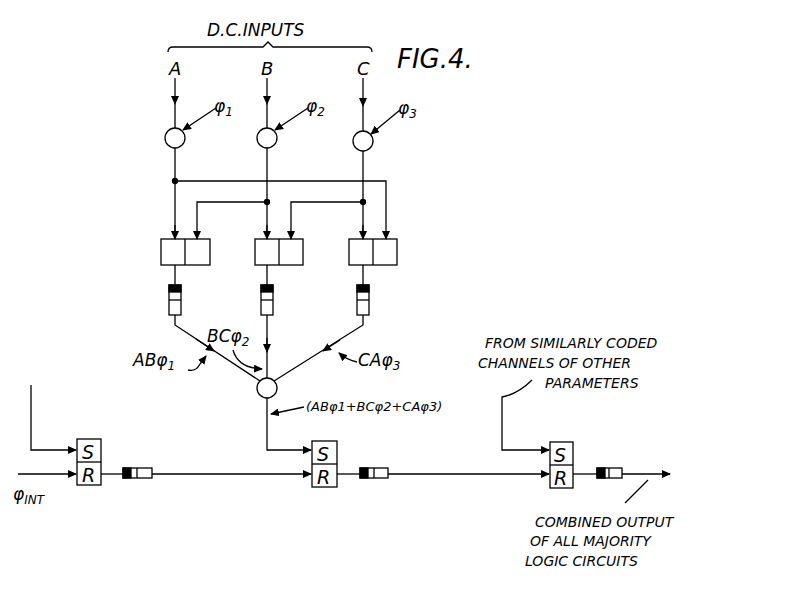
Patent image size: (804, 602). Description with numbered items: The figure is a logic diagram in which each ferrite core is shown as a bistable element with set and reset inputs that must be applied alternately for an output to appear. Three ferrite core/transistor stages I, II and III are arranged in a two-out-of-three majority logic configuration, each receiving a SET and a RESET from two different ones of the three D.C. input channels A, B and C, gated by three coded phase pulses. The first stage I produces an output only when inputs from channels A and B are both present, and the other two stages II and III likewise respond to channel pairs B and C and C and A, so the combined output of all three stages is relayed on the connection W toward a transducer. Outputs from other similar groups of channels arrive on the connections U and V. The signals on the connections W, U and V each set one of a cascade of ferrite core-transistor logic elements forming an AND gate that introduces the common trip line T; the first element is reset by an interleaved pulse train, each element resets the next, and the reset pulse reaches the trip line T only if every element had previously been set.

The first ferrite core/transistor stage I is at (174, 272).
The second ferrite core/transistor stage II is at (266, 272).
The third ferrite core/transistor stage III is at (362, 272).
The connection W is at (266, 419).
The connection U is at (31, 399).
The connection V is at (501, 401).
The trip line T is at (230, 474).